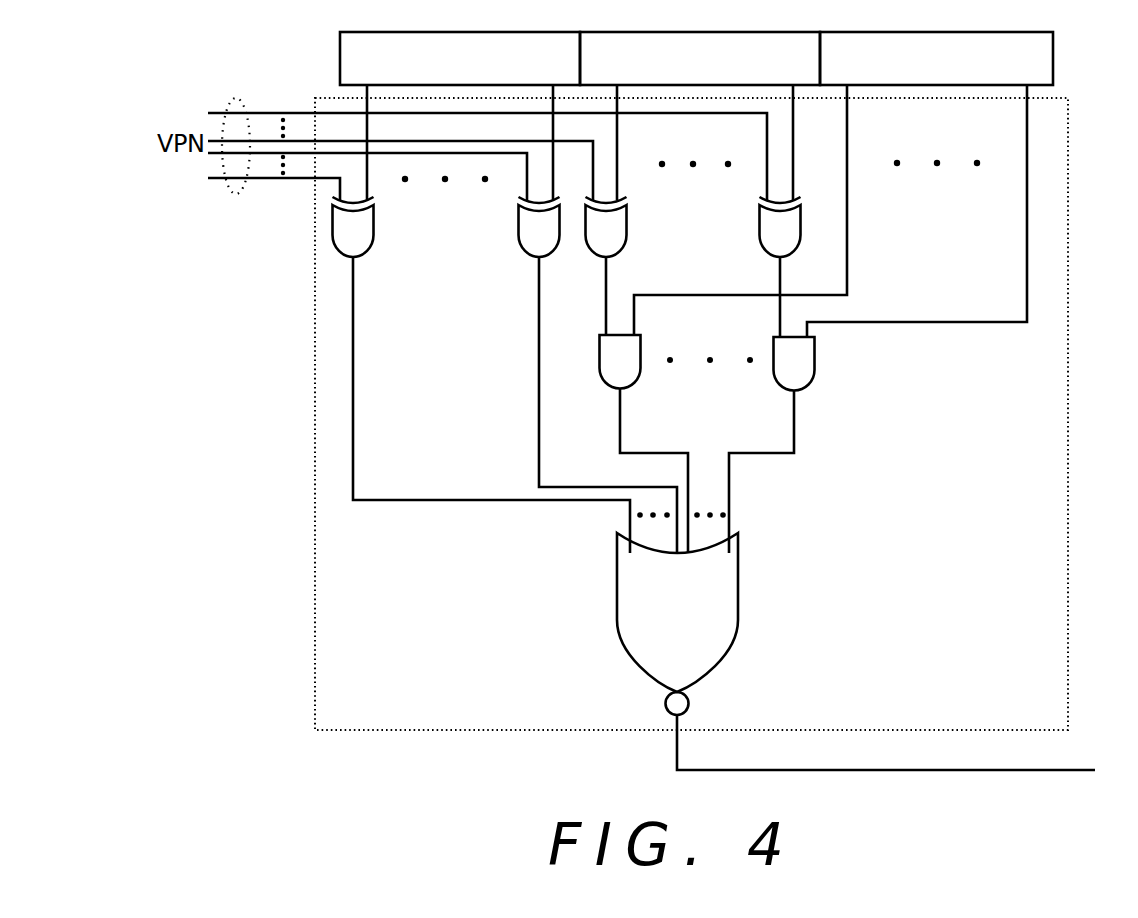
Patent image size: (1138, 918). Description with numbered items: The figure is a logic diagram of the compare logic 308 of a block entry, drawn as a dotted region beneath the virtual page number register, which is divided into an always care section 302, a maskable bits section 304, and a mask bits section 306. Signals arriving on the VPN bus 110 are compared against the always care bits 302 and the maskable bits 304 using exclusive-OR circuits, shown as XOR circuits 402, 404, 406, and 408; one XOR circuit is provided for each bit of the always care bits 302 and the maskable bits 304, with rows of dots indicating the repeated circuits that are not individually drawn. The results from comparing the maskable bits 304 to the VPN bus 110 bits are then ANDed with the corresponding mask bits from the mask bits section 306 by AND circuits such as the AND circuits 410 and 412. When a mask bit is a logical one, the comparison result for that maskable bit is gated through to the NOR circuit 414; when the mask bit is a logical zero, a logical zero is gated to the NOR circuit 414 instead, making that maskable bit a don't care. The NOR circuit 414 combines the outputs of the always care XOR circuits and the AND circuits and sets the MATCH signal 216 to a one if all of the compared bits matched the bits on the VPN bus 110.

The VPN bus 110 is at (233, 96).
The MATCH signal 216 is at (830, 770).
The always care section 302 is at (413, 32).
The maskable bits section 304 is at (647, 32).
The mask bits section 306 is at (903, 32).
The compare logic 308 is at (1068, 300).
The XOR circuit 402 is at (374, 214).
The XOR circuit 404 is at (518, 236).
The XOR circuit 406 is at (627, 240).
The XOR circuit 408 is at (759, 226).
The AND circuit 410 is at (640, 378).
The AND circuit 412 is at (814, 380).
The NOR circuit 414 is at (728, 648).